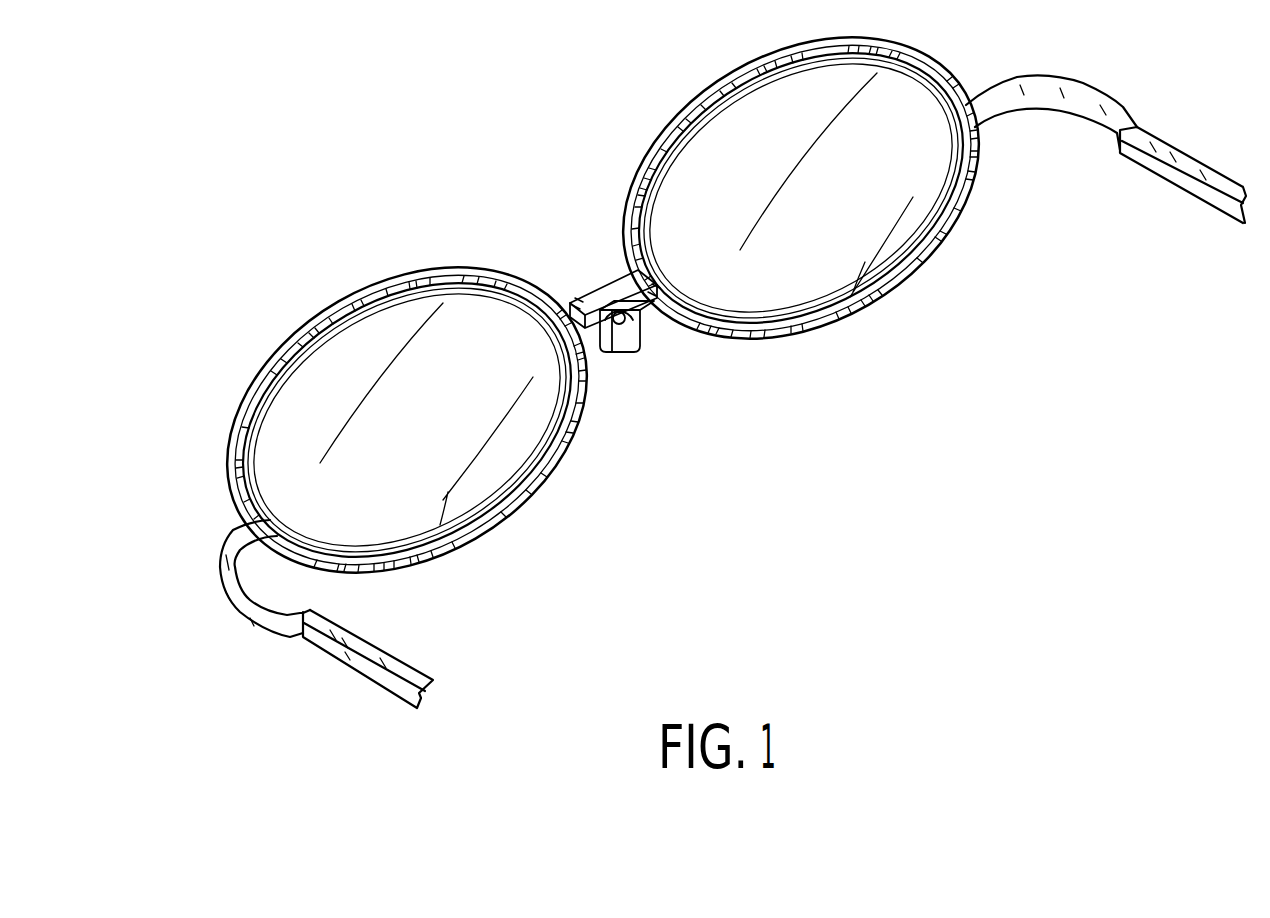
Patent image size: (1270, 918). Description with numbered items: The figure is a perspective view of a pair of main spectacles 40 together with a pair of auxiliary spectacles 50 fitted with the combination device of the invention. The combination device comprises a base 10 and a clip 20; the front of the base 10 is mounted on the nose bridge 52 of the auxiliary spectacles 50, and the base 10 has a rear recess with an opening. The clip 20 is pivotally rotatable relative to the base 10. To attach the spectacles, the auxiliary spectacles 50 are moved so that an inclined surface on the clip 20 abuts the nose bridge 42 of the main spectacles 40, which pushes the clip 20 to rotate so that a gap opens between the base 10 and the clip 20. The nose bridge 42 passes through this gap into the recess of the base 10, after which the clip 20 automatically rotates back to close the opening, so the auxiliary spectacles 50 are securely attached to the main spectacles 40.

The base 10 is at (612, 297).
The clip 20 is at (624, 346).
The main spectacles 40 is at (594, 437).
The nose bridge of the main spectacles 42 is at (655, 303).
The auxiliary spectacles 50 is at (392, 251).
The nose bridge of the auxiliary spectacles 52 is at (577, 305).